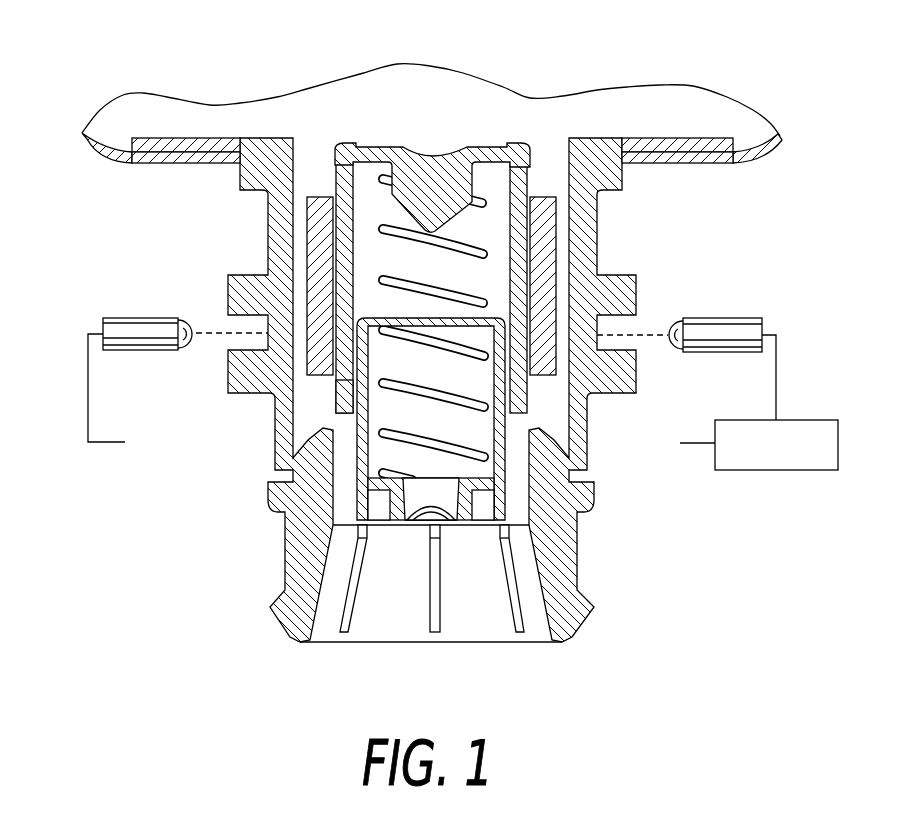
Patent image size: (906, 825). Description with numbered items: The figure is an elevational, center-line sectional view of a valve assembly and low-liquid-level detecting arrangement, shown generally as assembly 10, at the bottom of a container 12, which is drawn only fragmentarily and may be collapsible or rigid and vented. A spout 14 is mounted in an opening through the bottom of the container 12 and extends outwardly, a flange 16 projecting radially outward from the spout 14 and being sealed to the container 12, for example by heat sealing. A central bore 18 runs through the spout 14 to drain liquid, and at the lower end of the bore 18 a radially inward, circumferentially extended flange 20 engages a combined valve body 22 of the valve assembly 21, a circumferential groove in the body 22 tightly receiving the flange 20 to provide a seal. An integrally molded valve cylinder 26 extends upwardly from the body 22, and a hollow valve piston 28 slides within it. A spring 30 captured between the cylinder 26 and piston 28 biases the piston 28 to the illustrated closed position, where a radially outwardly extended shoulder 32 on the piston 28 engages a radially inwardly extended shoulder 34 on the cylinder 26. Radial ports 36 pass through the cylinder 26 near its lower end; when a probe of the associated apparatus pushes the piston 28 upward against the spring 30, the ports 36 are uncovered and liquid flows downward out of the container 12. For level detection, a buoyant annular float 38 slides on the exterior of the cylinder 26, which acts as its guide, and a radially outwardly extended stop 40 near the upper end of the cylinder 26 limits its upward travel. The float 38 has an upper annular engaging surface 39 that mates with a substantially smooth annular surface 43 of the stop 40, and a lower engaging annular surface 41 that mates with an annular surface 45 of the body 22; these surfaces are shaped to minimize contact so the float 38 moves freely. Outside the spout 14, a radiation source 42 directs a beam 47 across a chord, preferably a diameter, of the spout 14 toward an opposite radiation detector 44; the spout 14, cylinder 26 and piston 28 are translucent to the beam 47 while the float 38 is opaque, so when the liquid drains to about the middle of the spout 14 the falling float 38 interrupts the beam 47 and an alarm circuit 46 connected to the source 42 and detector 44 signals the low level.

The pressure relief and indicator assembly 10 is at (238, 639).
The container 12 is at (103, 148).
The spout 14 is at (597, 210).
The flange 16 is at (160, 137).
The central bore 18 is at (577, 160).
The flange 20 is at (582, 500).
The valve assembly 21 is at (593, 637).
The valve body 22 is at (580, 552).
The valve cylinder 26 is at (337, 187).
The valve piston 28 is at (443, 520).
The spring 30 is at (427, 292).
The shoulder 32 is at (512, 328).
The shoulder 34 is at (514, 347).
The radial ports 36 is at (343, 413).
The annular float 38 is at (307, 243).
The upper annular engaging surface 39 is at (537, 195).
The stop 40 is at (335, 143).
The lower engaging annular surface 41 is at (330, 377).
The radiation source 42 is at (135, 318).
The annular surface 43 is at (293, 173).
The radiation detector 44 is at (737, 318).
The annular surface 45 is at (313, 422).
The alarm circuit 46 is at (792, 420).
The beam 47 is at (210, 332).